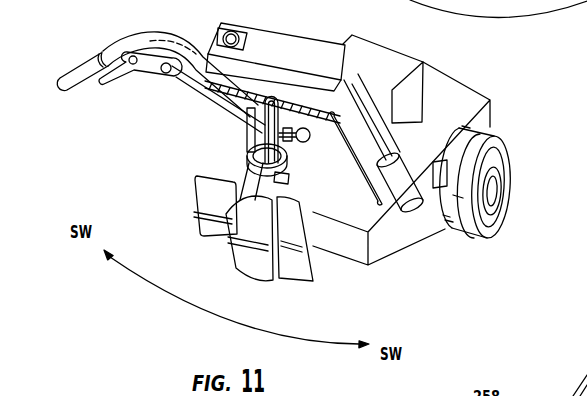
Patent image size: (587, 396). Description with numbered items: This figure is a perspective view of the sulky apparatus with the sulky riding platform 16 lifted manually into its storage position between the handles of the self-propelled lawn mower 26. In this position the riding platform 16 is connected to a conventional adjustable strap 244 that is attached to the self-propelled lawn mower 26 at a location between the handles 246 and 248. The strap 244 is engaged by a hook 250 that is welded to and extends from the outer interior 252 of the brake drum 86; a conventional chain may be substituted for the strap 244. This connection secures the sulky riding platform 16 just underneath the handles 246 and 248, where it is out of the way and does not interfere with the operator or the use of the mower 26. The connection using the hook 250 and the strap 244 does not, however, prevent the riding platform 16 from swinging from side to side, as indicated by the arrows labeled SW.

The sulky riding platform 16 is at (234, 259).
The self-propelled lawn mower 26 is at (414, 107).
The brake drum 86 is at (247, 167).
The adjustable strap 244 is at (263, 105).
The handle 246 is at (86, 71).
The handle 248 is at (388, 172).
The hook 250 is at (245, 143).
The outer interior 252 is at (248, 150).